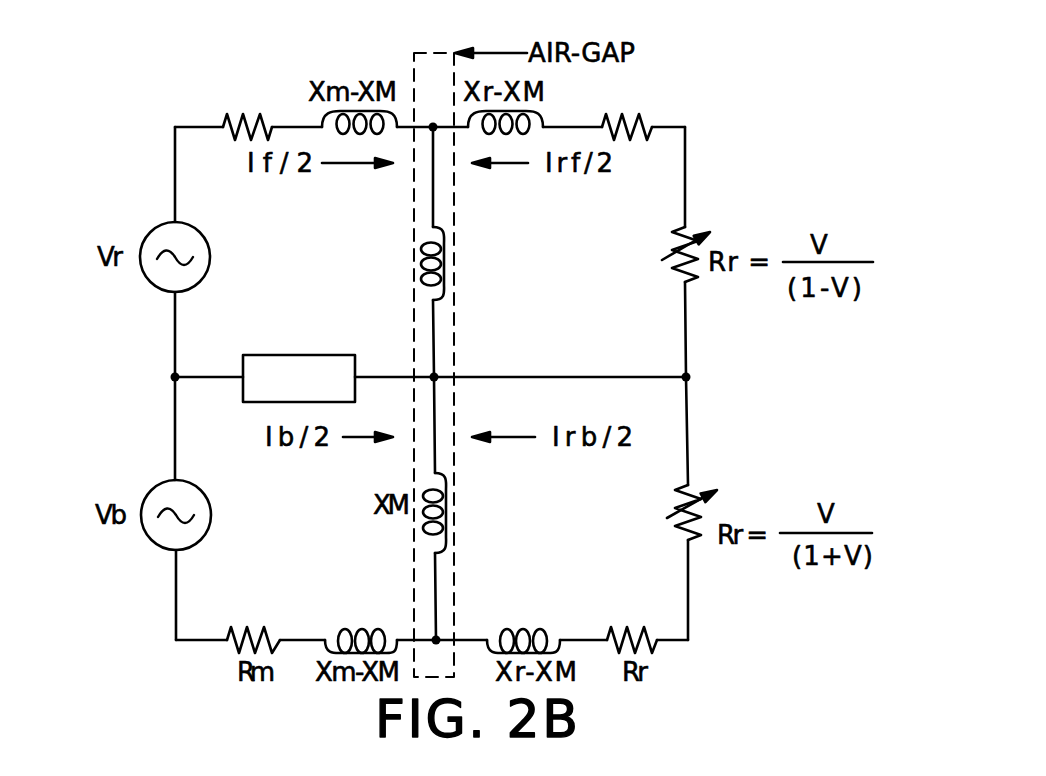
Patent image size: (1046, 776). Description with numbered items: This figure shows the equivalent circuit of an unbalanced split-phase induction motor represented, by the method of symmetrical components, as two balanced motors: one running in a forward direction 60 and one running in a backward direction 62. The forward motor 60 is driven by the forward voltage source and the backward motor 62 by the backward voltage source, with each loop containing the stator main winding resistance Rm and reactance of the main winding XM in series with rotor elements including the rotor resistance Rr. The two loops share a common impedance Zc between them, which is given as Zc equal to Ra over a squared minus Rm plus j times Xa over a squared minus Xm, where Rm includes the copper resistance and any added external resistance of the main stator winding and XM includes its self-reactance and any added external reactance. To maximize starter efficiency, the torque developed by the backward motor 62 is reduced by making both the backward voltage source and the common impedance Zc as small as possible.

The forward direction motor 60 is at (150, 207).
The backward direction motor 62 is at (154, 457).
The main stator winding resistance Rm is at (247, 108).
The rotor resistance Rr is at (627, 108).
The main winding reactance XM is at (405, 263).
The common impedance Zc is at (299, 378).